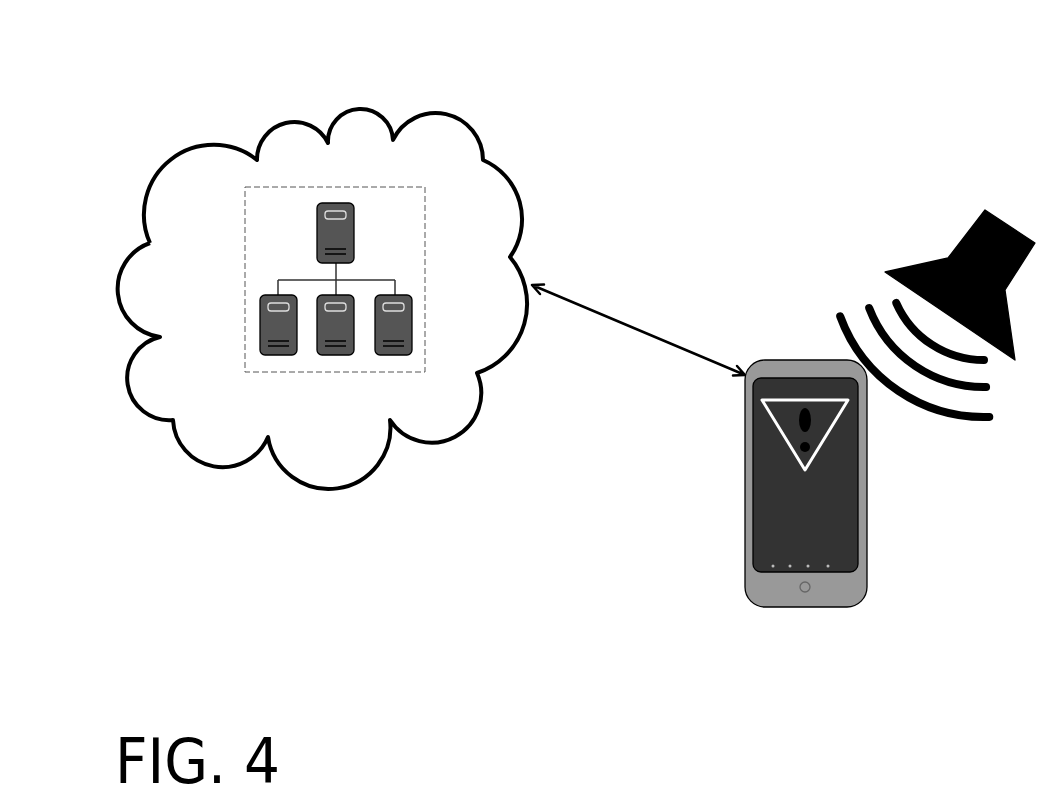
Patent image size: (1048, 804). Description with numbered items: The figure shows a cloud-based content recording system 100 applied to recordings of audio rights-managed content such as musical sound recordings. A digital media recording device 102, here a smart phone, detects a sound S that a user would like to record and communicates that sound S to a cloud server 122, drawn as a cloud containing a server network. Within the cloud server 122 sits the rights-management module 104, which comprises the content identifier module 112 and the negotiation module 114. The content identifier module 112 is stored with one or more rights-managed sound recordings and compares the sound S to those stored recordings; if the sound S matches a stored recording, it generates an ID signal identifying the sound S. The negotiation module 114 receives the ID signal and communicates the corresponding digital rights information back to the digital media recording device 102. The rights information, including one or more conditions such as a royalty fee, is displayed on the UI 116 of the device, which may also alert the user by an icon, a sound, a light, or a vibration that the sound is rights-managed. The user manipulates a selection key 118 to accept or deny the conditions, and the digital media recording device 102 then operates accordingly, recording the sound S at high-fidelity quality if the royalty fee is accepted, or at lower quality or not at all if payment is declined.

The cloud-based content recording system 100 is at (388, 590).
The digital media recording device 102 is at (805, 502).
The rights-management module 104 is at (324, 279).
The content identifier module 112 is at (352, 242).
The negotiation module 114 is at (394, 308).
The UI 116 is at (743, 442).
The selection key 118 is at (868, 565).
The cloud server 122 is at (287, 117).
The sound S is at (987, 393).